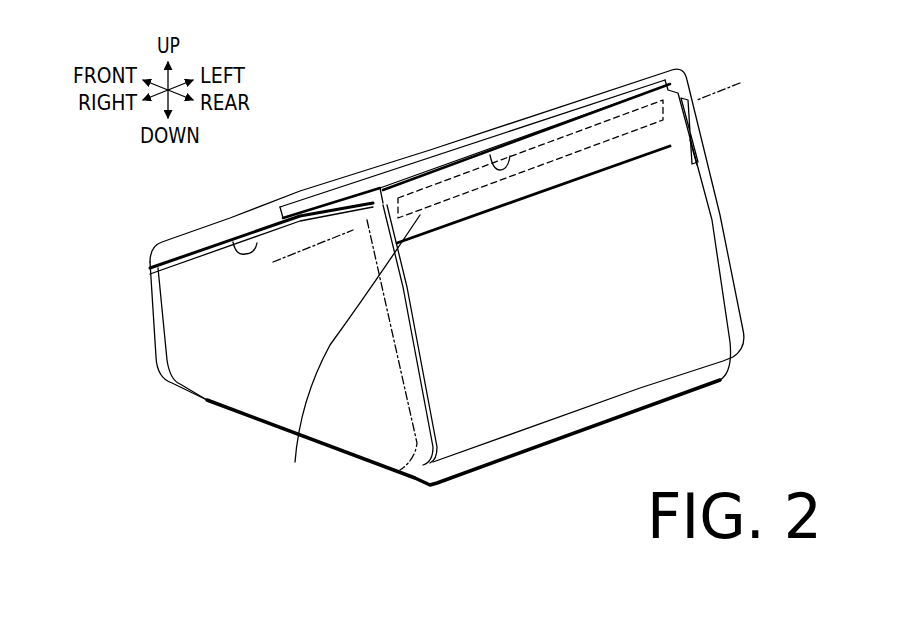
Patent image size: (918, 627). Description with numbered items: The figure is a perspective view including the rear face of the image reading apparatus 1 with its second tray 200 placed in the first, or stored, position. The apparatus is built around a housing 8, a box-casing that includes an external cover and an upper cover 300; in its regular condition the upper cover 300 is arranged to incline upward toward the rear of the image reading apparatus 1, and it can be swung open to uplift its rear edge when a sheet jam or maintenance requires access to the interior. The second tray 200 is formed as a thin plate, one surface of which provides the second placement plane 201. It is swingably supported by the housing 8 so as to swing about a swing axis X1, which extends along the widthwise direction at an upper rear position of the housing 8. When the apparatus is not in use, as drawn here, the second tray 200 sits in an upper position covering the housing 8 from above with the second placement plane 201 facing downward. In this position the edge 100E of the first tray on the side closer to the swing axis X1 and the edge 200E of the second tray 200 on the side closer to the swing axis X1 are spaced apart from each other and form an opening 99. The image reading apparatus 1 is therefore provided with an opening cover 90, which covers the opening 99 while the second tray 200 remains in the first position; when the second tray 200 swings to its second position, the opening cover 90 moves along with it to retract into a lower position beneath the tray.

The image reading apparatus 1 is at (370, 100).
The housing 8 is at (738, 243).
The opening cover 90 is at (351, 354).
The opening 99 is at (550, 150).
The edge of the first tray 100E is at (603, 130).
The second tray 200 is at (200, 226).
The edge of the second tray 200E is at (480, 160).
The second placement plane 201 is at (260, 230).
The upper cover 300 is at (192, 268).
The swing axis X1 is at (732, 85).